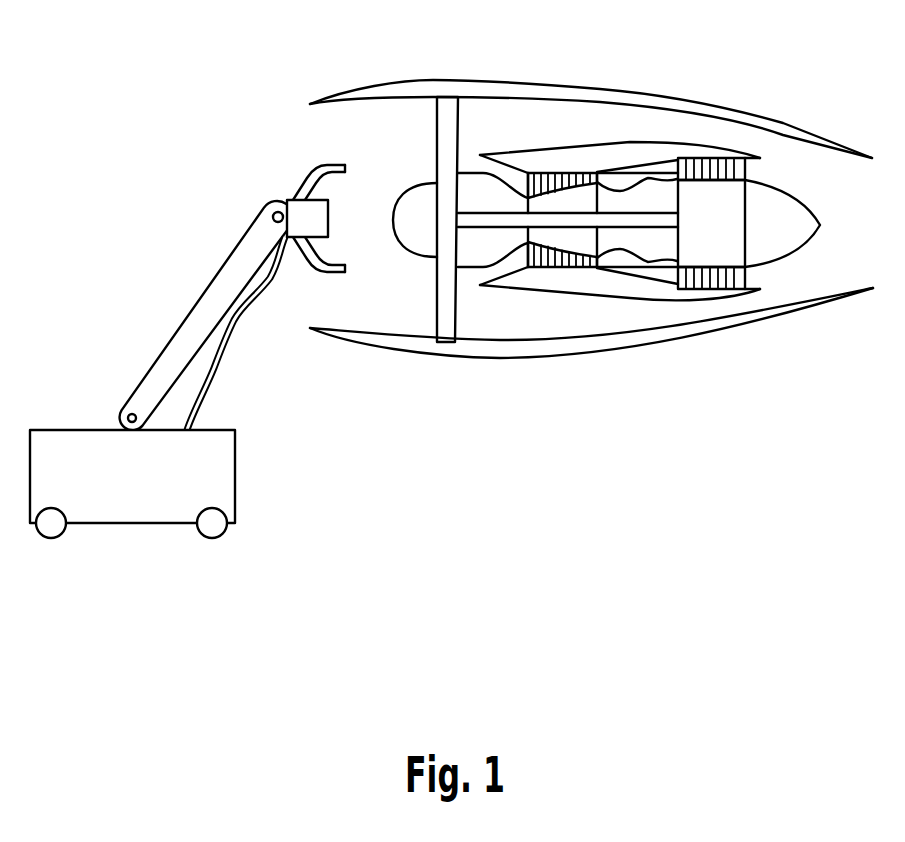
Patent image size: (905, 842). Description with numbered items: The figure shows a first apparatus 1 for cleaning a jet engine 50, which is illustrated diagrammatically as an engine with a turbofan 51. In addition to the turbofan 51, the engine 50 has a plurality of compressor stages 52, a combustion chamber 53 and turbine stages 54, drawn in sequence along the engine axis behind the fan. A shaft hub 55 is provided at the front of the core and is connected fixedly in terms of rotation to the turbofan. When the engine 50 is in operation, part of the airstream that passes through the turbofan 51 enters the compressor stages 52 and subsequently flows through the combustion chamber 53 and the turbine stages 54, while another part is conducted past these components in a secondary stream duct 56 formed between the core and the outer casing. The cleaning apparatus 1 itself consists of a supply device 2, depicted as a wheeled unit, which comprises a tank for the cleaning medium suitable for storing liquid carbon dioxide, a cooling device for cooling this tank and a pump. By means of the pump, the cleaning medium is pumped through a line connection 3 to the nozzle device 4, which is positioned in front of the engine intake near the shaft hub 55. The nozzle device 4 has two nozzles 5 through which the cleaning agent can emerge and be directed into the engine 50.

The apparatus 1 is at (155, 258).
The supply device 2 is at (96, 491).
The line connection 3 is at (227, 348).
The nozzle device 4 is at (306, 215).
The nozzles 5 is at (347, 170).
The jet engine 50 is at (483, 376).
The turbofan 51 is at (450, 142).
The compressor stages 52 is at (570, 170).
The combustion chamber 53 is at (625, 178).
The turbine stages 54 is at (708, 160).
The shaft hub 55 is at (413, 207).
The secondary stream duct 56 is at (594, 318).